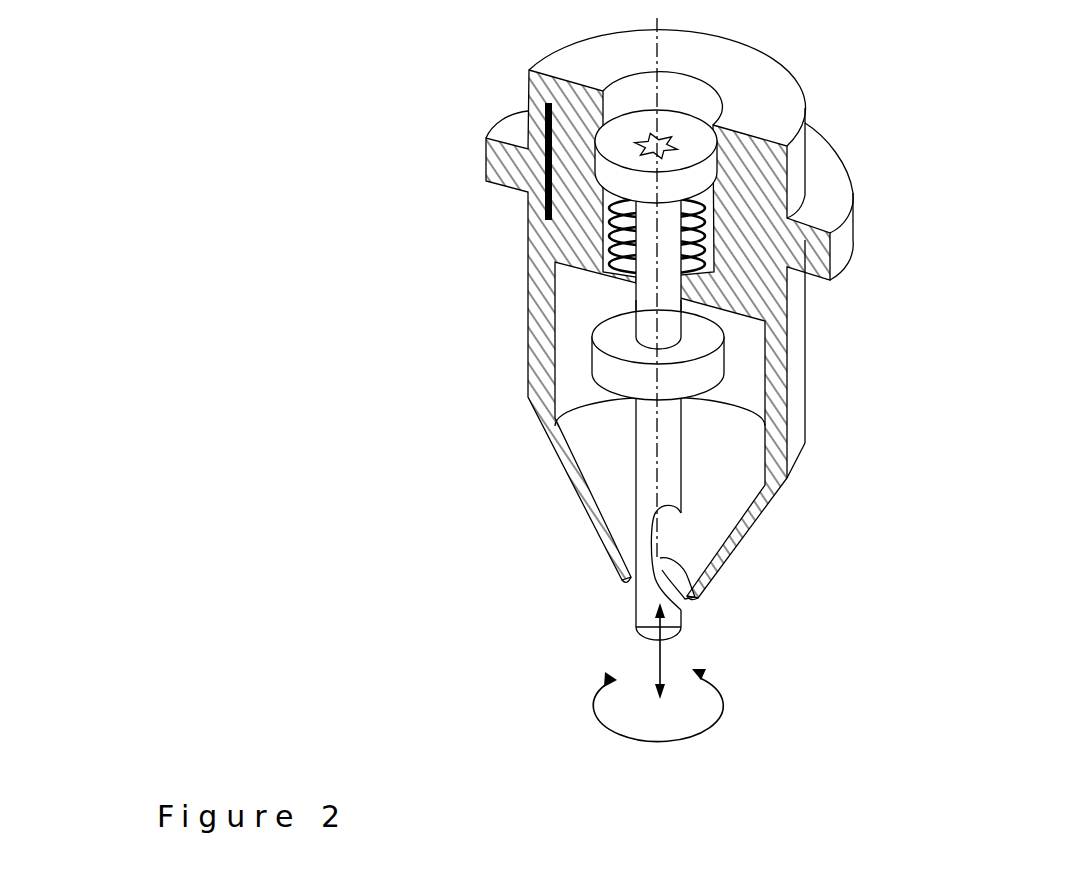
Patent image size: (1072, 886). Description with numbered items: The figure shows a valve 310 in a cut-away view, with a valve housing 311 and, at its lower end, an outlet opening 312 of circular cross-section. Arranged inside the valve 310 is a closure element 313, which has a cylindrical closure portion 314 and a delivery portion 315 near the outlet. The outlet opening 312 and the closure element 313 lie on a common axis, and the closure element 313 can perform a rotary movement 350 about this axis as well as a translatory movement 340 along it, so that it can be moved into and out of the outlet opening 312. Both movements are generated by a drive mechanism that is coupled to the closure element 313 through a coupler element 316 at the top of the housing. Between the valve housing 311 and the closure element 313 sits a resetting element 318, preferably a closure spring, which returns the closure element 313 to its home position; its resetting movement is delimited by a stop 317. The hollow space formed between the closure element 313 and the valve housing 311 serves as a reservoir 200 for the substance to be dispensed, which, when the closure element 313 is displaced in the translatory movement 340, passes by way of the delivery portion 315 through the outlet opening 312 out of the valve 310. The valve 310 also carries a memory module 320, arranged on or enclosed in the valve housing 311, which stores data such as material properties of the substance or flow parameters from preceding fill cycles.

The valve 310 is at (856, 138).
The valve housing 311 is at (803, 345).
The outlet opening 312 is at (673, 588).
The closure element 313 is at (630, 425).
The cylindrical closure portion 314 is at (636, 627).
The delivery portion 315 is at (667, 532).
The coupler element 316 is at (647, 138).
The stop 317 is at (603, 370).
The resetting element 318 is at (612, 242).
The memory module 320 is at (548, 174).
The reservoir 200 is at (725, 462).
The translatory movement 340 is at (660, 652).
The rotary movement 350 is at (727, 700).